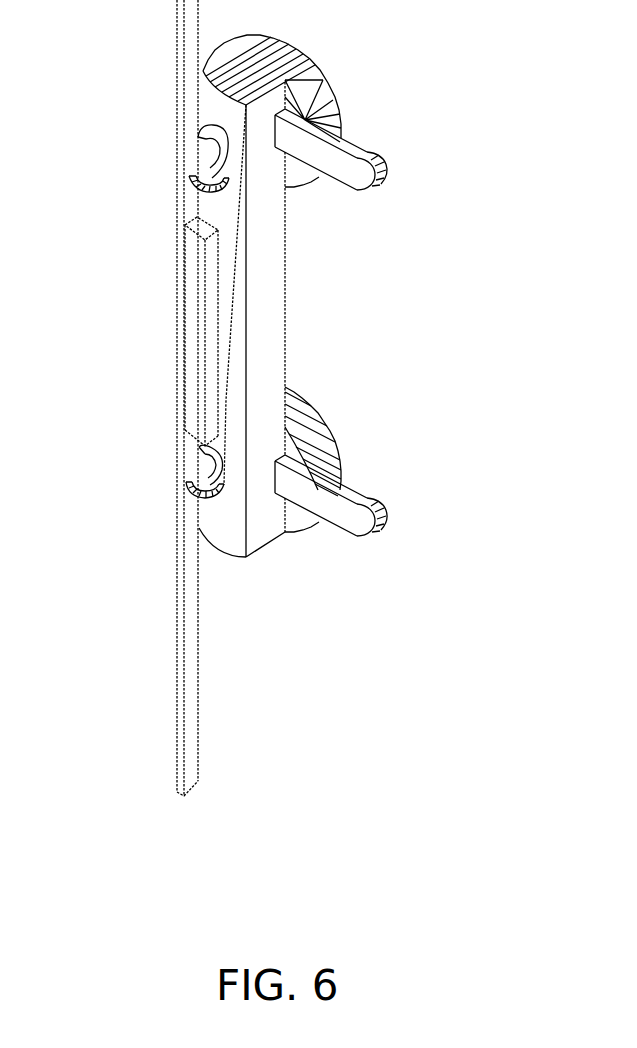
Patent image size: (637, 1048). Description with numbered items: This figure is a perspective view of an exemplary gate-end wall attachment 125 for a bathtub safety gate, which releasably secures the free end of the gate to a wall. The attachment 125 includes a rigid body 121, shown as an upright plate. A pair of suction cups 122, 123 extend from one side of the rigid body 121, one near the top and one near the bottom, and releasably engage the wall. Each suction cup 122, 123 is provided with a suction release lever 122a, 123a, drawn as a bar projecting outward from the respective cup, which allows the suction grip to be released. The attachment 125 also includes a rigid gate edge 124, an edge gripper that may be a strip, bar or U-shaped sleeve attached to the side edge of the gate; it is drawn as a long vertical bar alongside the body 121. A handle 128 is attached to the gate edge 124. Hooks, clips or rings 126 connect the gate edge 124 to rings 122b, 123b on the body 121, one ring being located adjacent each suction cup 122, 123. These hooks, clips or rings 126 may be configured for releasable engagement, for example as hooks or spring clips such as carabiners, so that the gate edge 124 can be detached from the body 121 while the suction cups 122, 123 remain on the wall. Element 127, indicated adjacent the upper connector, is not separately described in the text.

The rigid body 121 is at (272, 334).
The suction cup 122 is at (318, 66).
The suction release lever 122a is at (377, 172).
The ring 122b is at (202, 140).
The suction cup 123 is at (344, 474).
The suction release lever 123a is at (378, 527).
The ring 123b is at (199, 447).
The gate edge 124 is at (180, 683).
The gate-end wall attachment 125 is at (297, 272).
The hooks, clips or rings 126 is at (199, 494).
The upper claw 127 is at (190, 177).
The handle 128 is at (206, 344).